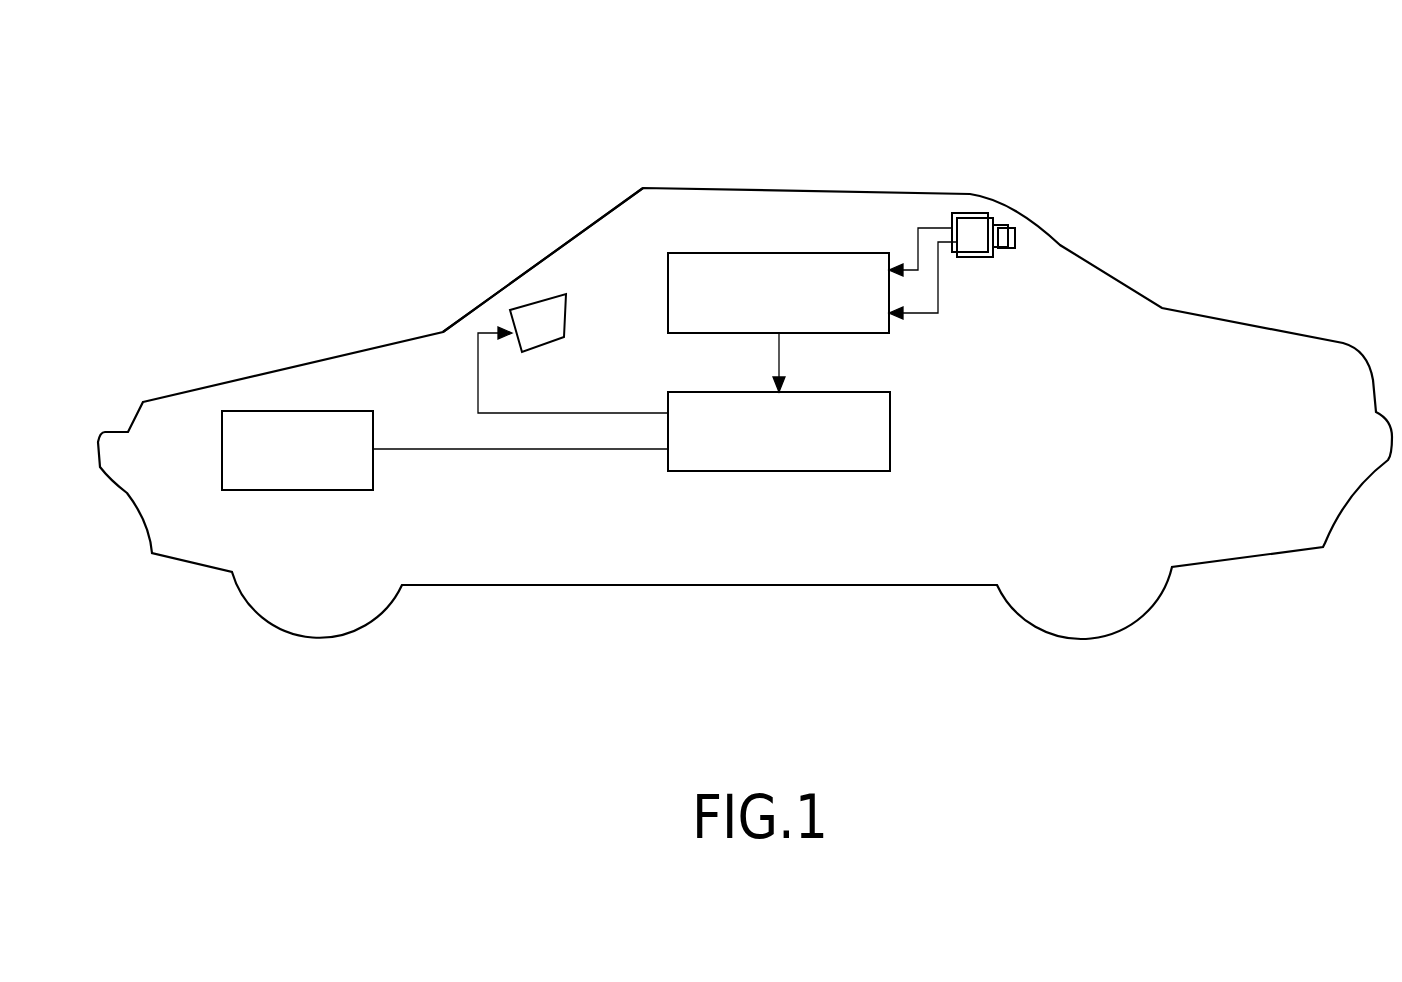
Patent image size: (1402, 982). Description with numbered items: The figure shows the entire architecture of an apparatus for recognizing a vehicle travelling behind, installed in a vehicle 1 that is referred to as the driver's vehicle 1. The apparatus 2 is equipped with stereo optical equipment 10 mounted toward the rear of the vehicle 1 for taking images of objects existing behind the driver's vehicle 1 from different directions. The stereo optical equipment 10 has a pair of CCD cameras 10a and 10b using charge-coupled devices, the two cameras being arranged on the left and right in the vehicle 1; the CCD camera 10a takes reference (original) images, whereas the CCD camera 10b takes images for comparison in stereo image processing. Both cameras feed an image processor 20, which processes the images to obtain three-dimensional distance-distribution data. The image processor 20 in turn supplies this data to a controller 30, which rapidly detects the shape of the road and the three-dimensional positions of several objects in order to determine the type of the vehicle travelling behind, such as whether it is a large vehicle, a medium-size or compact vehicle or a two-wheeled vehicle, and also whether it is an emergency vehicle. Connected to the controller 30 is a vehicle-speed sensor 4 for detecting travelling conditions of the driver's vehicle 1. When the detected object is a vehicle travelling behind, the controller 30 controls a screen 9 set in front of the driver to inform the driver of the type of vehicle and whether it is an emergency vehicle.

The vehicle 1 is at (1077, 245).
The apparatus for recognizing a vehicle travelling behind 2 is at (623, 238).
The vehicle-speed sensor 4 is at (305, 492).
The screen 9 is at (523, 307).
The stereo optical equipment 10 is at (967, 191).
The CCD camera 10a is at (960, 213).
The CCD camera 10b is at (893, 118).
The image processor 20 is at (822, 253).
The controller 30 is at (822, 471).